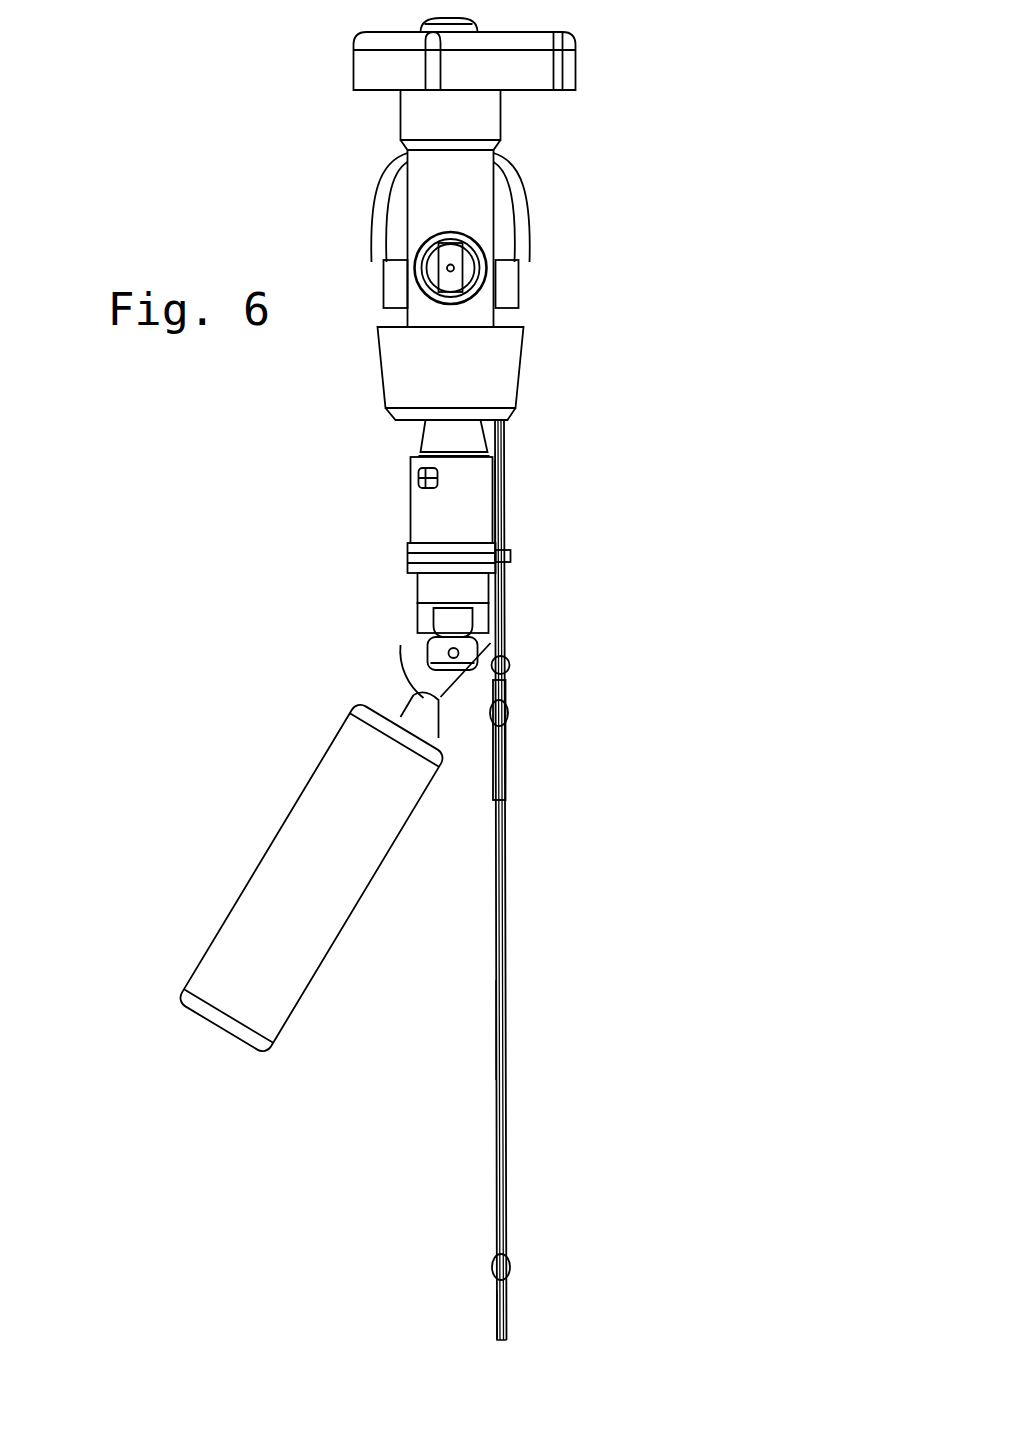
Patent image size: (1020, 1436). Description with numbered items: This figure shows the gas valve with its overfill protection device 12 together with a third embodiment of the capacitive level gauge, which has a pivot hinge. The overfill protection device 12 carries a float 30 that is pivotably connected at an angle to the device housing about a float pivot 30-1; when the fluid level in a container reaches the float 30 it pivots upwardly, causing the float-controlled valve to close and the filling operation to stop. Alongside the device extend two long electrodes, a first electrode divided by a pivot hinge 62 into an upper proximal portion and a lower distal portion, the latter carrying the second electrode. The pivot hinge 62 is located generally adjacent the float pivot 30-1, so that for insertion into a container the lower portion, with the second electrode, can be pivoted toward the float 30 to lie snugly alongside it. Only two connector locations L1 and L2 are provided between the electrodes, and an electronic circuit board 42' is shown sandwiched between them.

The overfill protection device 12 is at (337, 668).
The float 30 is at (268, 918).
The float pivot 30-1 is at (450, 652).
The electronic circuit board 42' is at (588, 752).
The pivot hinge 62 is at (510, 663).
The connector location L1 is at (508, 710).
The connector location L2 is at (510, 1262).